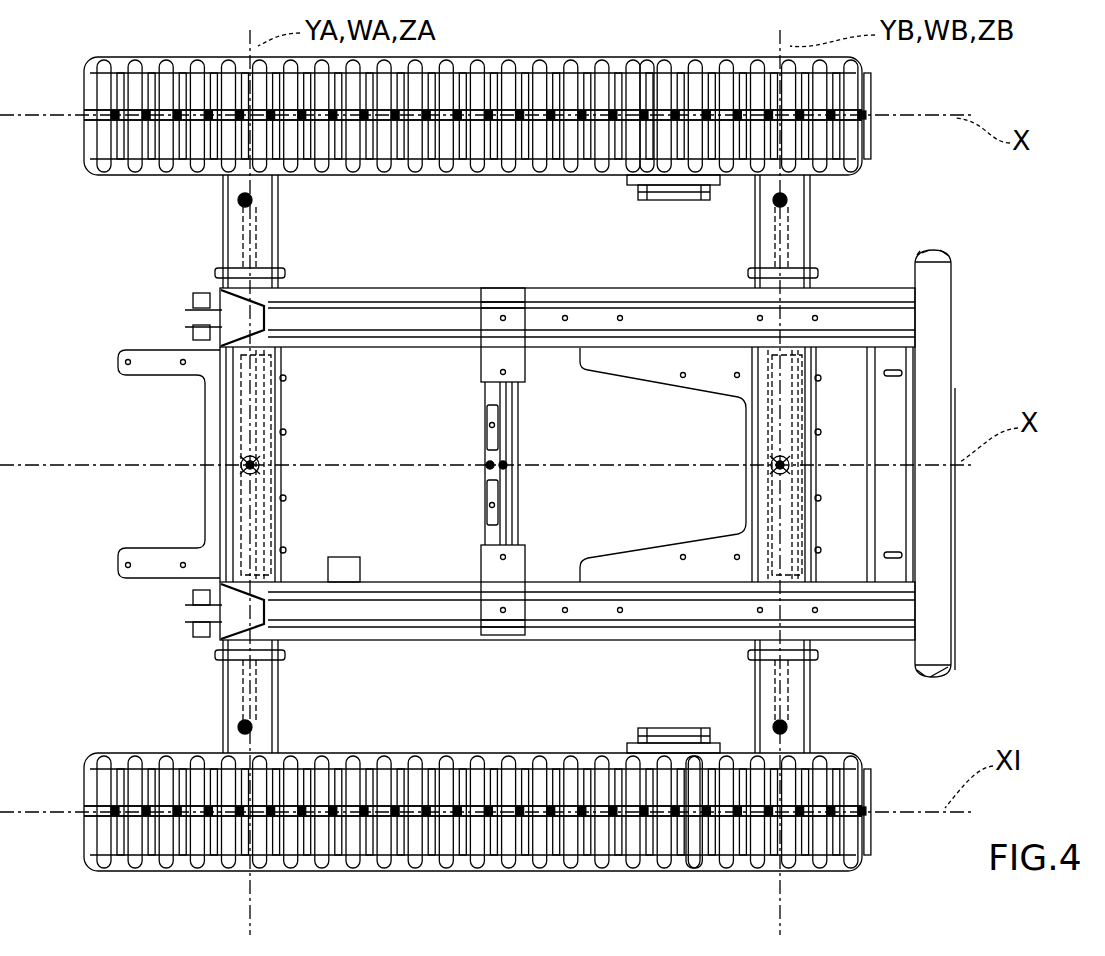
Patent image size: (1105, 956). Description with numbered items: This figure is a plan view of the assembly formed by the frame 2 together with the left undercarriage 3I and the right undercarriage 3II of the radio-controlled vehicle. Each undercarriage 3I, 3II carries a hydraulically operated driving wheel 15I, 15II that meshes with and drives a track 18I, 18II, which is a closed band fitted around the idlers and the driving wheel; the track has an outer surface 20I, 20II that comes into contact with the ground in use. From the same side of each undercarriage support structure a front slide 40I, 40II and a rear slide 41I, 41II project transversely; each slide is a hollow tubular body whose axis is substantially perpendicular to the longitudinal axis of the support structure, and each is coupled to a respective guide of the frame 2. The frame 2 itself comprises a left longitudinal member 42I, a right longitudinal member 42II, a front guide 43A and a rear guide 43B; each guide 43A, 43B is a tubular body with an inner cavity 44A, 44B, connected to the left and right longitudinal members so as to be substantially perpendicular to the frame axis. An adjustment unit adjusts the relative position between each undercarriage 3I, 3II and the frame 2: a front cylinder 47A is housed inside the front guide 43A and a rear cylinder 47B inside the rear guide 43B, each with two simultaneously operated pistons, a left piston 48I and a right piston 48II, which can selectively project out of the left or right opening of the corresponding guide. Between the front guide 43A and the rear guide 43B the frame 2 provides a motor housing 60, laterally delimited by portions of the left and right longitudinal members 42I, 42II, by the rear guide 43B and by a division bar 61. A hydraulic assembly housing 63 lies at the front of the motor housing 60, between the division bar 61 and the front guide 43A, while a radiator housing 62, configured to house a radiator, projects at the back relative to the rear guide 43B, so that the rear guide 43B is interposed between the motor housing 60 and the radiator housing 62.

The frame 2 is at (976, 340).
The left undercarriage 3I is at (872, 795).
The right undercarriage 3II is at (882, 81).
The driving wheel 15I is at (676, 718).
The driving wheel 15II is at (684, 208).
The track 18I is at (698, 848).
The track 18II is at (690, 83).
The outer surface 20I is at (866, 846).
The outer surface 20II is at (870, 148).
The front slide 40I is at (256, 727).
The front slide 40II is at (258, 238).
The rear slide 41I is at (797, 740).
The rear slide 41II is at (800, 235).
The left longitudinal member 42I is at (593, 645).
The right longitudinal member 42II is at (583, 315).
The front guide 43A is at (272, 410).
The rear guide 43B is at (800, 442).
The inner cavity 44A is at (282, 540).
The inner cavity 44B is at (755, 483).
The front cylinder 47A is at (254, 518).
The rear cylinder 47B is at (790, 548).
The left piston 48I is at (256, 686).
The right piston 48II is at (256, 255).
The motor housing 60 is at (655, 352).
The division bar 61 is at (520, 447).
The radiator housing 62 is at (838, 578).
The hydraulic assembly housing 63 is at (437, 350).